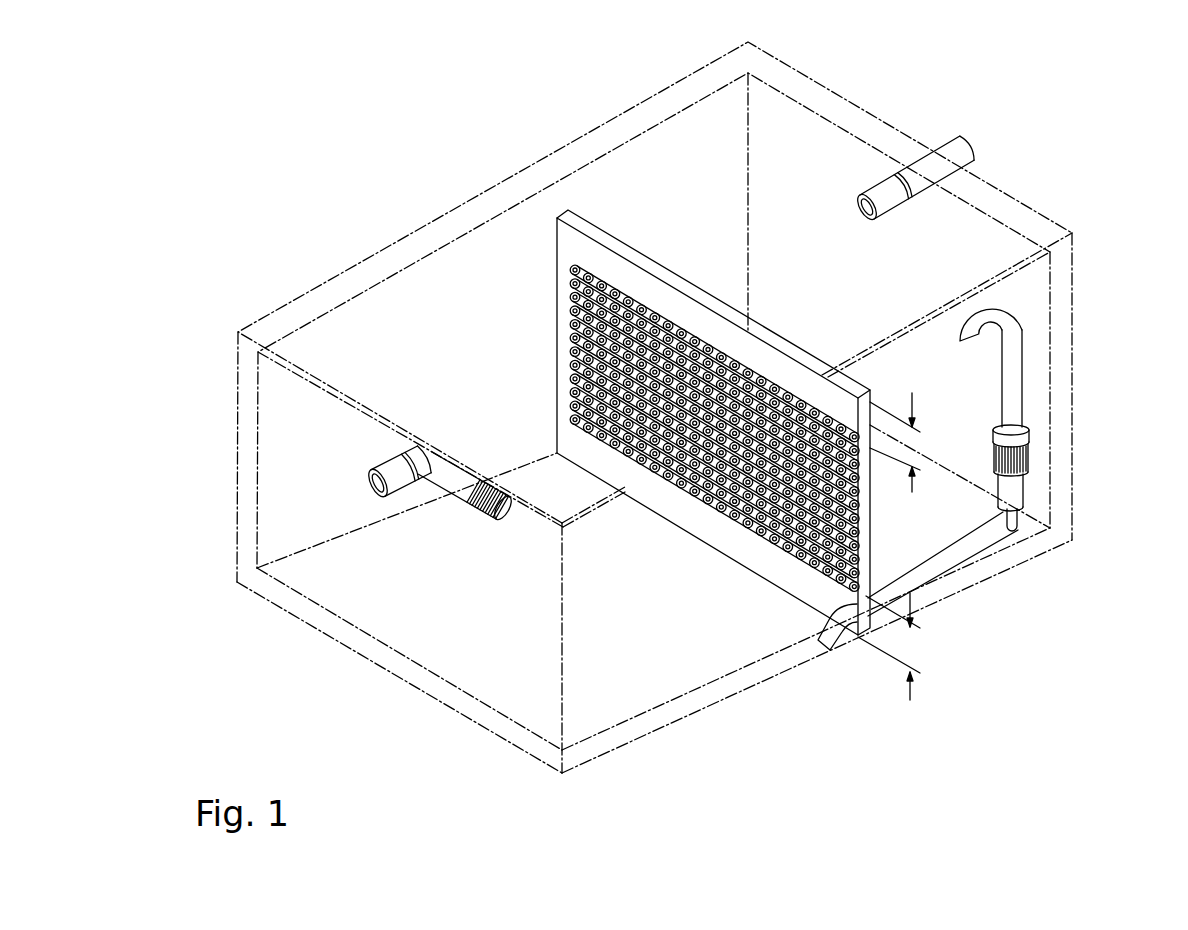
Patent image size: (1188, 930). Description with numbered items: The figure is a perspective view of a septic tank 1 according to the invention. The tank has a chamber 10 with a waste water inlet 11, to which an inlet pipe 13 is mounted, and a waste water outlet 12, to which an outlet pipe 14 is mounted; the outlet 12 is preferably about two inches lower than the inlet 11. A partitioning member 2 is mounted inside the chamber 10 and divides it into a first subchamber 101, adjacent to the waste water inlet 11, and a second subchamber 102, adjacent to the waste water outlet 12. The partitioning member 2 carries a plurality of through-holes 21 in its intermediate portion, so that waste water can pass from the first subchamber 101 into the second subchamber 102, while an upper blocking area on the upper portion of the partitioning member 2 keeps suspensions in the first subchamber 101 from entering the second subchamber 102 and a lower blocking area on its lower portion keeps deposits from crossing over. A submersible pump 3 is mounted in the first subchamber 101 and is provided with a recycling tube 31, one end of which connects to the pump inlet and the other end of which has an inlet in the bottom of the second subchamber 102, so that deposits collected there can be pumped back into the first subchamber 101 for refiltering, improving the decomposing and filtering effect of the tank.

The water tank assembly 1 is at (950, 655).
The chamber 10 is at (450, 310).
The first subchamber 101 is at (983, 548).
The second subchamber 102 is at (693, 677).
The partitioning member 2 is at (580, 222).
The through-holes 21 is at (573, 266).
The submersible pump 3 is at (1032, 452).
The recycling tube 31 is at (935, 560).
The waste water inlet 11 is at (940, 187).
The inlet pipe 13 is at (958, 142).
The waste water outlet 12 is at (380, 463).
The outlet pipe 14 is at (380, 468).